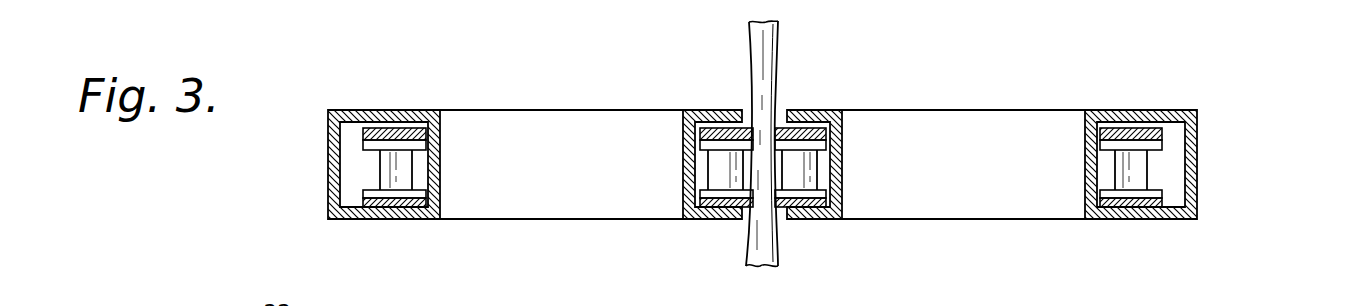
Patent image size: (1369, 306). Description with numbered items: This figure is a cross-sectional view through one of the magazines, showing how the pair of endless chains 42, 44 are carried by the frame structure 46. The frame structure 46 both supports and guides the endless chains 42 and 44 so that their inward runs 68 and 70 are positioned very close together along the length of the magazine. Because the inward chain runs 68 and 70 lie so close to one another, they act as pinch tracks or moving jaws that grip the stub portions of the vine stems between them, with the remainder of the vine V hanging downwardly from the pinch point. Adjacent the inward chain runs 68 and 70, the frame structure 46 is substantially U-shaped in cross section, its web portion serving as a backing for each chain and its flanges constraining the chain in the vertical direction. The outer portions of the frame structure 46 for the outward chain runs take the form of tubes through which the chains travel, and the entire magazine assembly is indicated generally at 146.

The endless chain 42 is at (370, 163).
The endless chain 44 is at (1153, 174).
The frame structure 46 is at (1112, 102).
The inward chain run 68 is at (720, 110).
The inward chain run 70 is at (806, 124).
The roller assembly 146 is at (1257, 101).
The vertical strip V is at (751, 33).